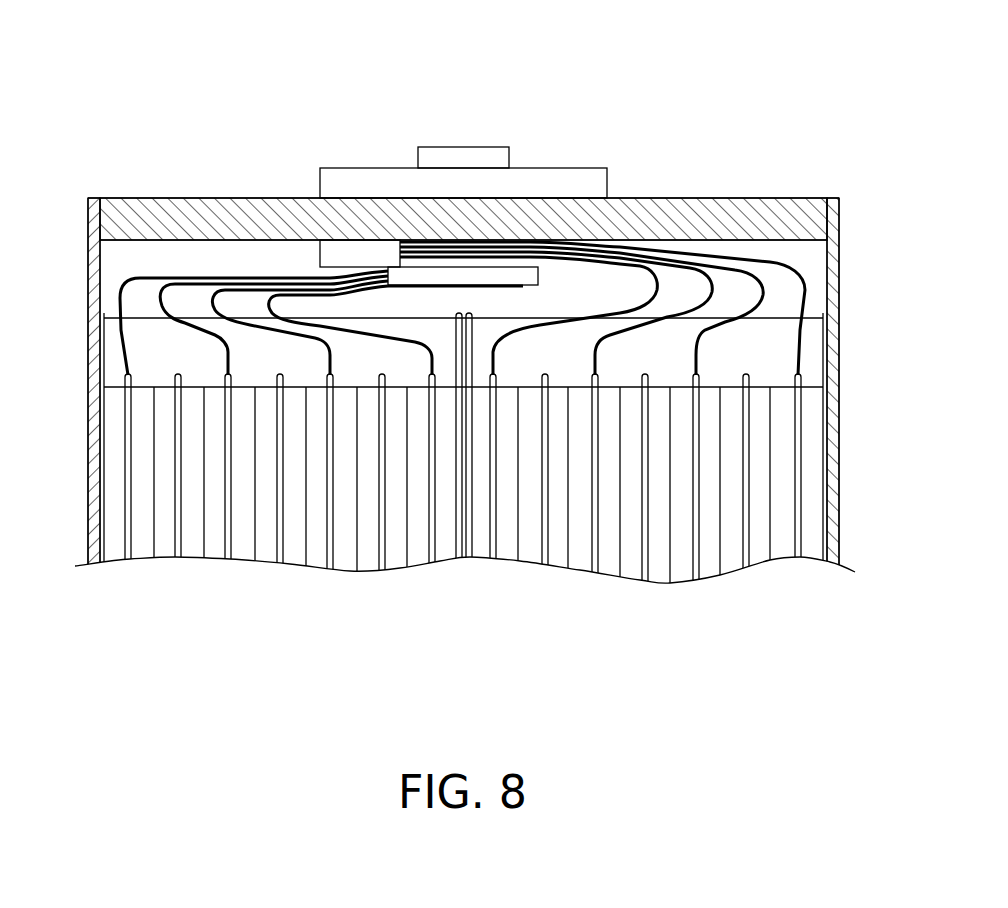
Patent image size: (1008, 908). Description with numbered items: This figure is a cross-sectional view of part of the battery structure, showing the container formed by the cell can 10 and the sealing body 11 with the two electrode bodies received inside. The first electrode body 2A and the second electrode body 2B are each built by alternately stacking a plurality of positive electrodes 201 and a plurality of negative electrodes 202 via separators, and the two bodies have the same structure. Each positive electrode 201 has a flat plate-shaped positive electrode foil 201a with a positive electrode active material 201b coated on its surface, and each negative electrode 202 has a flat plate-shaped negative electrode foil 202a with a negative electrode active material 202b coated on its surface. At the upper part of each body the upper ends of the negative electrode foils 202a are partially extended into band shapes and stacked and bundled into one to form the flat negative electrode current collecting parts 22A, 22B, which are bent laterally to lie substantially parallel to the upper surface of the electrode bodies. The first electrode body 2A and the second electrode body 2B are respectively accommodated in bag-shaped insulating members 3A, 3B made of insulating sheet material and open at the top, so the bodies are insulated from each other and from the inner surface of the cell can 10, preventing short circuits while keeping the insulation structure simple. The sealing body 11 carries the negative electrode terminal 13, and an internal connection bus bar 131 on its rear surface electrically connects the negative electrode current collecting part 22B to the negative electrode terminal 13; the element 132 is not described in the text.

The cell can 10 is at (840, 265).
The sealing body 11 is at (755, 198).
The negative electrode terminal 13 is at (465, 147).
The internal connection bus bar 131 is at (398, 273).
The insulating member 132 is at (337, 250).
The negative electrode current collecting part 22A is at (522, 257).
The negative electrode current collecting part 22B is at (302, 270).
The insulating member 3A is at (815, 350).
The insulating member 3B is at (110, 345).
The first electrode body 2A is at (730, 583).
The second electrode body 2B is at (165, 582).
The positive electrode 201 is at (451, 528).
The positive electrode foil 201a is at (564, 617).
The positive electrode active material 201b is at (333, 646).
The negative electrode 202 is at (463, 549).
The negative electrode foil 202a is at (615, 660).
The negative electrode active material 202b is at (723, 688).